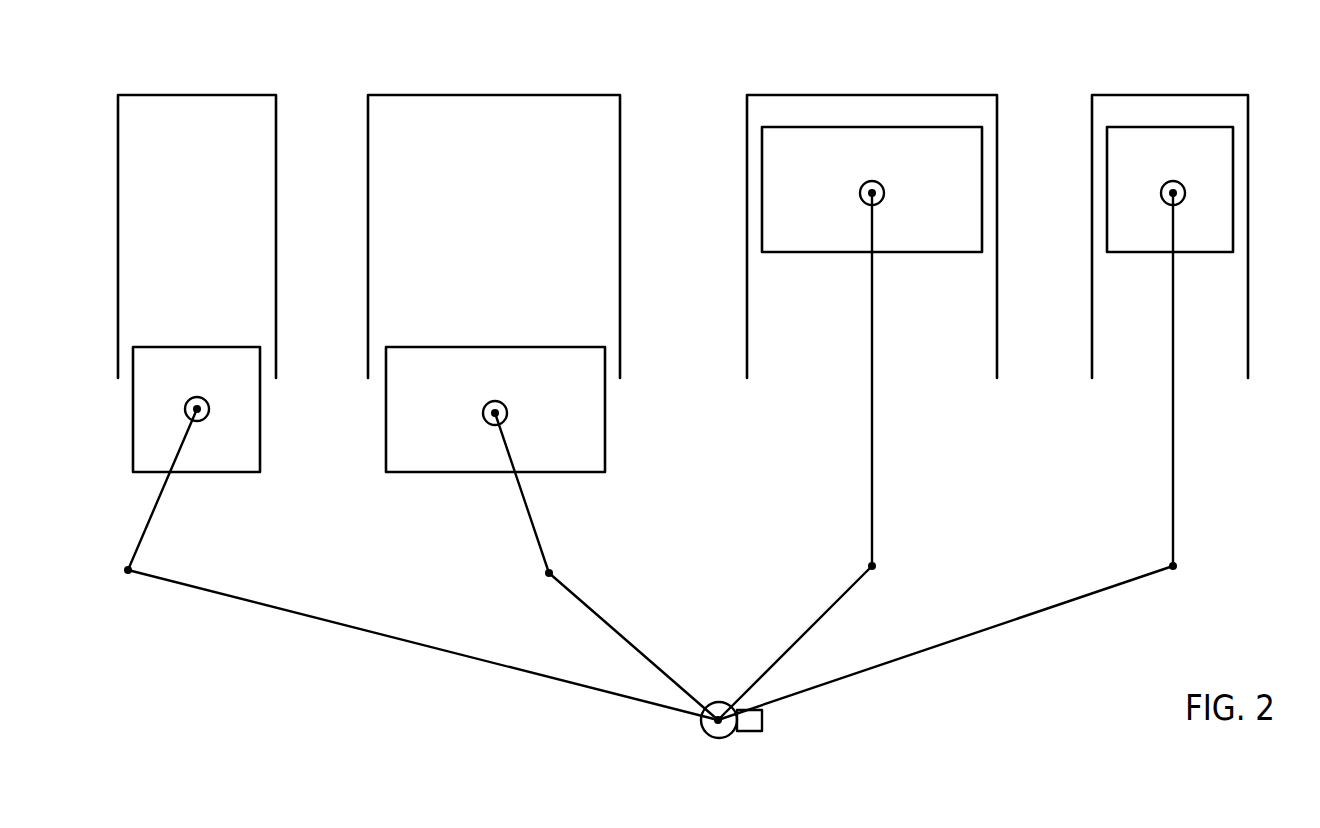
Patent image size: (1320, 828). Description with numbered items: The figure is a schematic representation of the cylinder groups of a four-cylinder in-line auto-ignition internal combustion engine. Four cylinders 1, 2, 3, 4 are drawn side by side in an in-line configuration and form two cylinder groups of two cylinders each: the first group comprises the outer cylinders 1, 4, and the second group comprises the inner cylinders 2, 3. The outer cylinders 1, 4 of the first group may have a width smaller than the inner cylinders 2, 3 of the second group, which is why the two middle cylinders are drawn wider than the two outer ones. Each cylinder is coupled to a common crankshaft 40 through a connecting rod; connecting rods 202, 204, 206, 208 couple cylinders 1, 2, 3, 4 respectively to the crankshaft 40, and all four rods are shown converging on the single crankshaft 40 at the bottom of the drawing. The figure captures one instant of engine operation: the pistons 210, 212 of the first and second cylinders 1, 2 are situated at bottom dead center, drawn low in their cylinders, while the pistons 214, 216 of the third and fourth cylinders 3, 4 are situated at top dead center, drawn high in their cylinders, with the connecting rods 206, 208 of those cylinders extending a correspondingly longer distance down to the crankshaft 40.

The first cylinder 1 is at (187, 95).
The second cylinder 2 is at (480, 95).
The third cylinder 3 is at (871, 95).
The fourth cylinder 4 is at (1170, 95).
The piston of first cylinder 210 is at (260, 455).
The piston of second cylinder 212 is at (605, 440).
The piston of third cylinder 214 is at (982, 180).
The piston of fourth cylinder 216 is at (1233, 175).
The connecting rod 202 is at (392, 638).
The connecting rod 204 is at (632, 645).
The connecting rod 206 is at (848, 595).
The connecting rod 208 is at (972, 636).
The crankshaft 40 is at (721, 702).